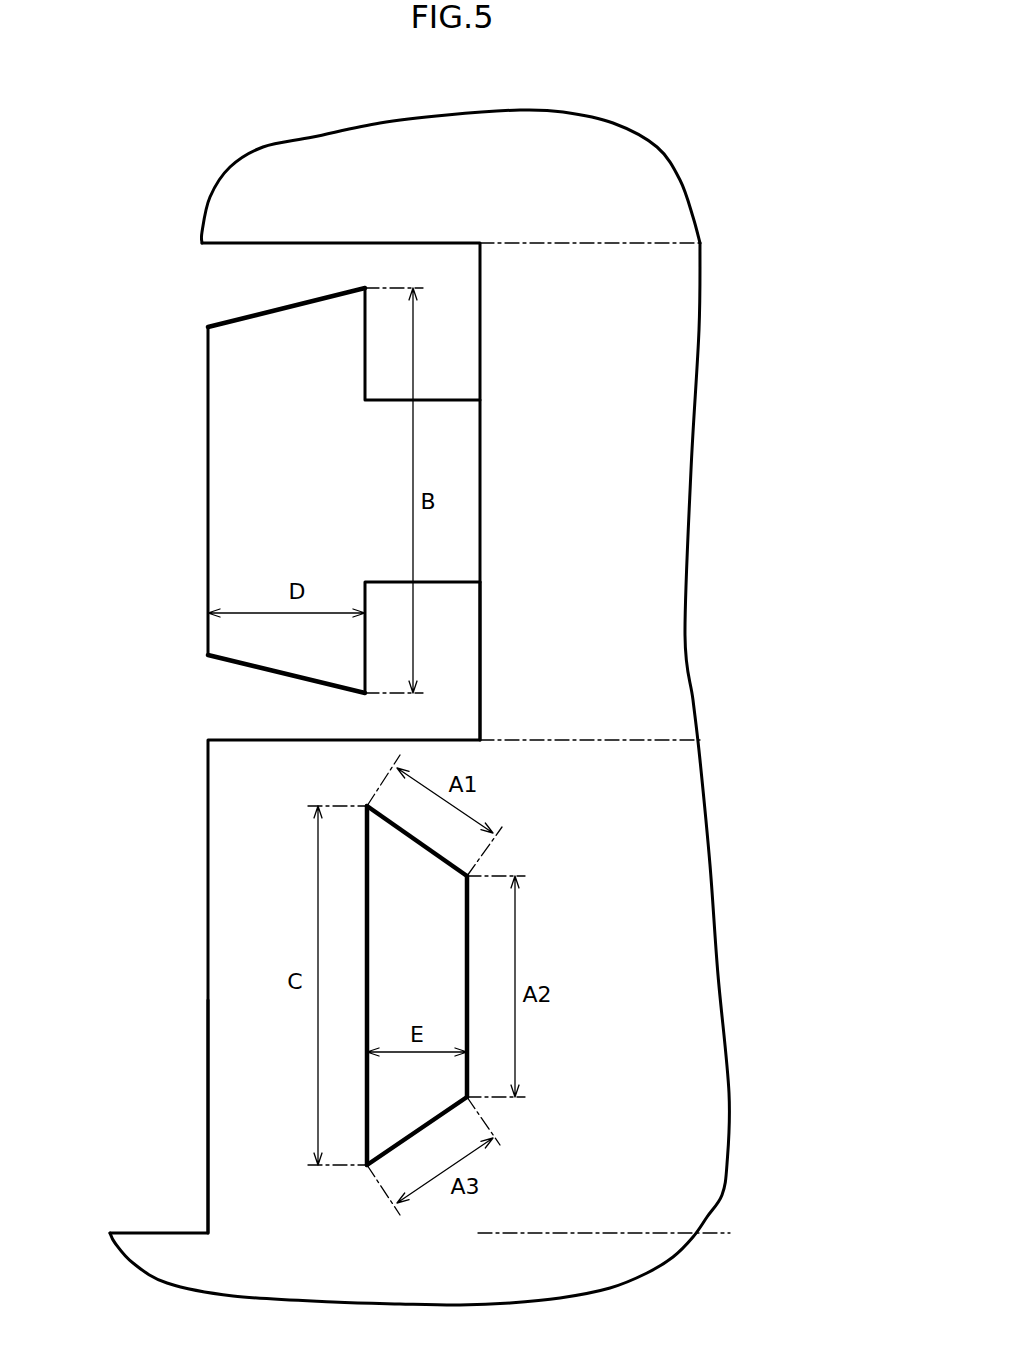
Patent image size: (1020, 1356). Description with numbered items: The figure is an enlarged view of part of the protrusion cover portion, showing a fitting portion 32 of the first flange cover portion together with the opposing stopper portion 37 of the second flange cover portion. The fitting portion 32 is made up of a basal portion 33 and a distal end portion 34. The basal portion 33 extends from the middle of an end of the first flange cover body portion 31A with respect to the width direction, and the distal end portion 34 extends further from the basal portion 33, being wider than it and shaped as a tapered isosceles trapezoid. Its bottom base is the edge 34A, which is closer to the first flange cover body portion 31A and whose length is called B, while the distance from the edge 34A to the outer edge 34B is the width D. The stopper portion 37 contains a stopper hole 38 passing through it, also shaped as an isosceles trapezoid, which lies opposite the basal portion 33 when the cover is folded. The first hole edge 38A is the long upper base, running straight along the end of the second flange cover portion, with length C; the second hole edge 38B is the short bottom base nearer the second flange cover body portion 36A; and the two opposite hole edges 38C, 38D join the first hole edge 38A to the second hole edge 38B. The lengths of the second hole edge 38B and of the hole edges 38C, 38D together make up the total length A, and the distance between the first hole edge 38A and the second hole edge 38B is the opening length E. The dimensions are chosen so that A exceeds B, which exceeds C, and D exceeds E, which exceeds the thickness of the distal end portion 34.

The first flange cover body portion 31A is at (677, 476).
The fitting portion 32 is at (257, 490).
The basal portion 33 is at (433, 477).
The distal end portion 34 is at (245, 586).
The edge 34A is at (363, 378).
The outer edge 34B is at (234, 667).
The second flange cover body portion 36A is at (677, 862).
The stopper portion 37 is at (240, 1148).
The stopper hole 38 is at (470, 966).
The first hole edge 38A is at (367, 1012).
The second hole edge 38B is at (467, 1032).
The hole edge 38C is at (447, 853).
The hole edge 38D is at (437, 1122).